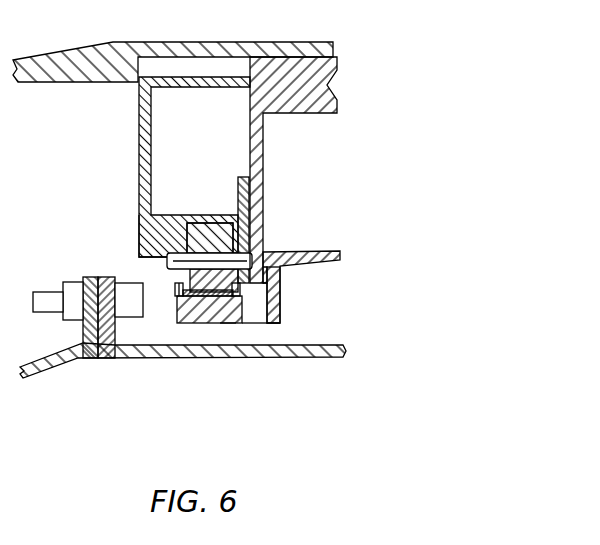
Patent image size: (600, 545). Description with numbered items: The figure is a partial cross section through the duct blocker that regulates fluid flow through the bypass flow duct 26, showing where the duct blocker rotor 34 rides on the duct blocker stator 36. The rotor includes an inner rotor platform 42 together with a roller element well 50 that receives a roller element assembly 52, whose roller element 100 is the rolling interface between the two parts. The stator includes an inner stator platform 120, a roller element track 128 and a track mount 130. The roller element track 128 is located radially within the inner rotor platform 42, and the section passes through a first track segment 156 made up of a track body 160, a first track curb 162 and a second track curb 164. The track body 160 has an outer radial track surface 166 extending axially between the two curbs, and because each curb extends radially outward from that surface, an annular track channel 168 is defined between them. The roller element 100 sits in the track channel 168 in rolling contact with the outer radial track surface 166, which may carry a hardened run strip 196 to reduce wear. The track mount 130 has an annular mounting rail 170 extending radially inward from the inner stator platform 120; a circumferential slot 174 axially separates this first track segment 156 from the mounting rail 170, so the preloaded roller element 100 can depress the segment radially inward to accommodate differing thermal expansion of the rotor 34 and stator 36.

The bypass flow duct 26 is at (62, 197).
The duct blocker rotor 34 is at (130, 138).
The duct blocker stator 36 is at (334, 82).
The inner rotor platform 42 is at (140, 252).
The roller element well 50 is at (224, 215).
The roller element assembly 52 is at (139, 238).
The roller element 100 is at (205, 220).
The inner stator platform 120 is at (330, 252).
The roller element track 128 is at (203, 336).
The track mount 130 is at (273, 336).
The first track segment 156 is at (228, 336).
The track body 160 is at (190, 323).
The first track curb 162 is at (178, 284).
The second track curb 164 is at (279, 303).
The outer radial track surface 166 is at (275, 280).
The annular track channel 168 is at (178, 296).
The mounting rail 170 is at (283, 323).
The circumferential slot 174 is at (253, 327).
The hardened run strip 196 is at (255, 258).